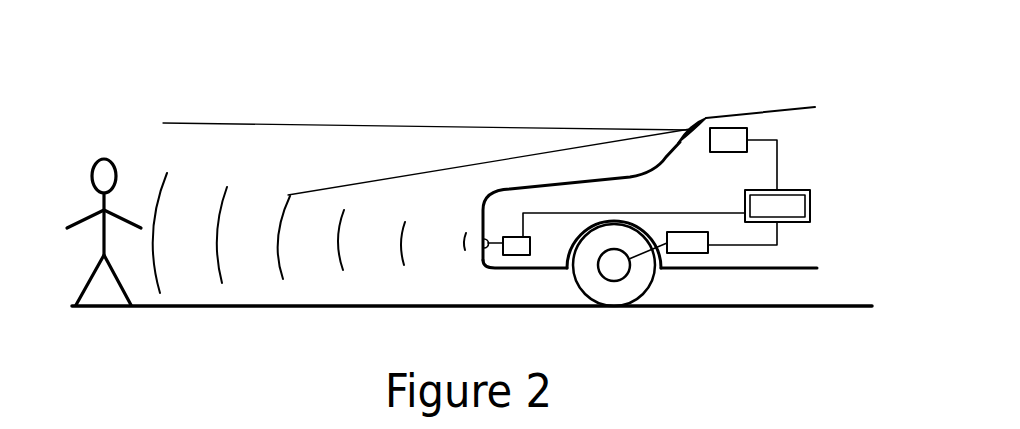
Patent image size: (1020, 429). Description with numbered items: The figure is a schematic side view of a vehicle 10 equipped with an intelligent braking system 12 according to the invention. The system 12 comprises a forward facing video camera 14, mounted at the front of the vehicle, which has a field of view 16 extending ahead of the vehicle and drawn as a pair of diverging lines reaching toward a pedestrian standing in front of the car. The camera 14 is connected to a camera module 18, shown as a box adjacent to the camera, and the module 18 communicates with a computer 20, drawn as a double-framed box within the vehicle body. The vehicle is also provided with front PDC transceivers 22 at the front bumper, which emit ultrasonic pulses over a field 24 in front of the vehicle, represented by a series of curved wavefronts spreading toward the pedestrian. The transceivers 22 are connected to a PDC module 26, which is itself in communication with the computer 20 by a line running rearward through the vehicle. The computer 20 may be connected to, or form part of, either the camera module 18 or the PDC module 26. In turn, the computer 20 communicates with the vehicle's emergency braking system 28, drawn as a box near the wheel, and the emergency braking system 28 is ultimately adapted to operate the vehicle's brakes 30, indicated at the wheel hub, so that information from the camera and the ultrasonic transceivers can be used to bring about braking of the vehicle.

The vehicle 10 is at (645, 98).
The intelligent braking system 12 is at (842, 133).
The forward facing camera 14 is at (698, 124).
The field of view 16 is at (345, 138).
The camera module 18 is at (732, 137).
The computer 20 is at (788, 205).
The front PDC transceivers 22 is at (482, 246).
The field 24 is at (220, 233).
The PDC module 26 is at (517, 257).
The emergency braking system 28 is at (688, 253).
The brakes 30 is at (607, 280).